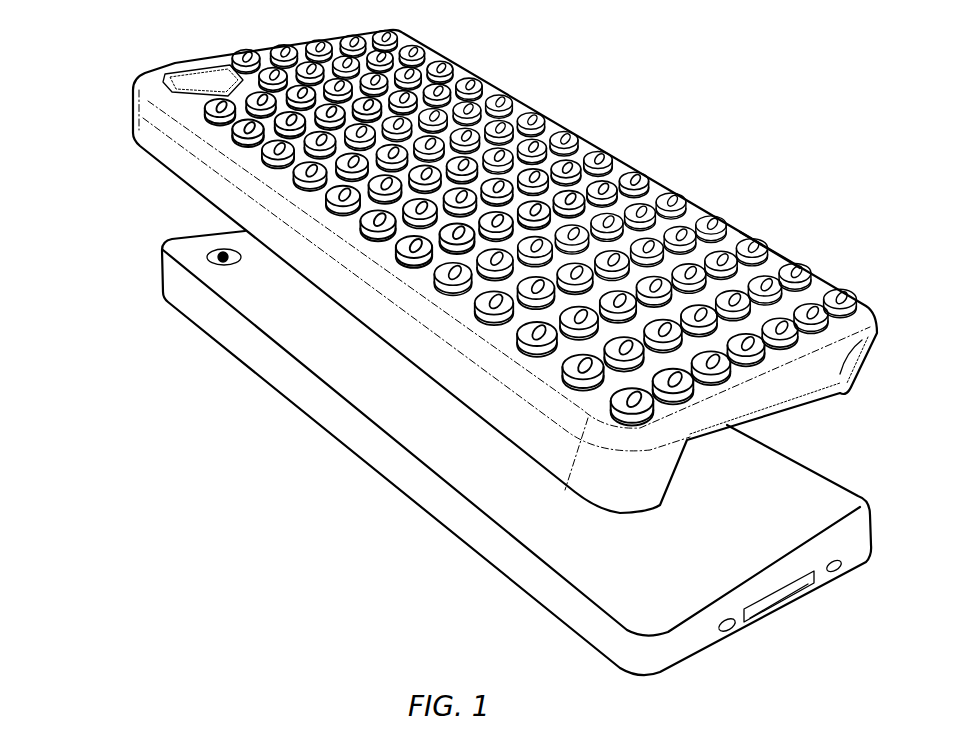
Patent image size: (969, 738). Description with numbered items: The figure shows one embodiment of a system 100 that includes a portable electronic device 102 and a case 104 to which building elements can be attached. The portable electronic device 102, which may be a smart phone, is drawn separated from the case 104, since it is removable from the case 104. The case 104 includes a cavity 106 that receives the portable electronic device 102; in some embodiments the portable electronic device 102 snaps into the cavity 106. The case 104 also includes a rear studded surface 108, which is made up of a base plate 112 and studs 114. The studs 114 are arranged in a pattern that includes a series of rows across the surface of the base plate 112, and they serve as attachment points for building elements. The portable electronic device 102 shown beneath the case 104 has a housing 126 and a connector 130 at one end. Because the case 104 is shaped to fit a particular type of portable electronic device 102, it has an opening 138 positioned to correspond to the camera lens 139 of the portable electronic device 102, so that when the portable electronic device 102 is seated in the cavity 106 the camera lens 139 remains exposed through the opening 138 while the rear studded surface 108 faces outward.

The system 100 is at (108, 131).
The portable electronic device 102 is at (516, 453).
The case 104 is at (507, 263).
The cavity 106 is at (814, 405).
The rear studded surface 108 is at (687, 141).
The base plate 112 is at (780, 259).
The studs 114 is at (845, 290).
The housing 126 is at (409, 409).
The connector 130 is at (781, 595).
The opening 138 is at (185, 77).
The camera lens 139 is at (232, 267).